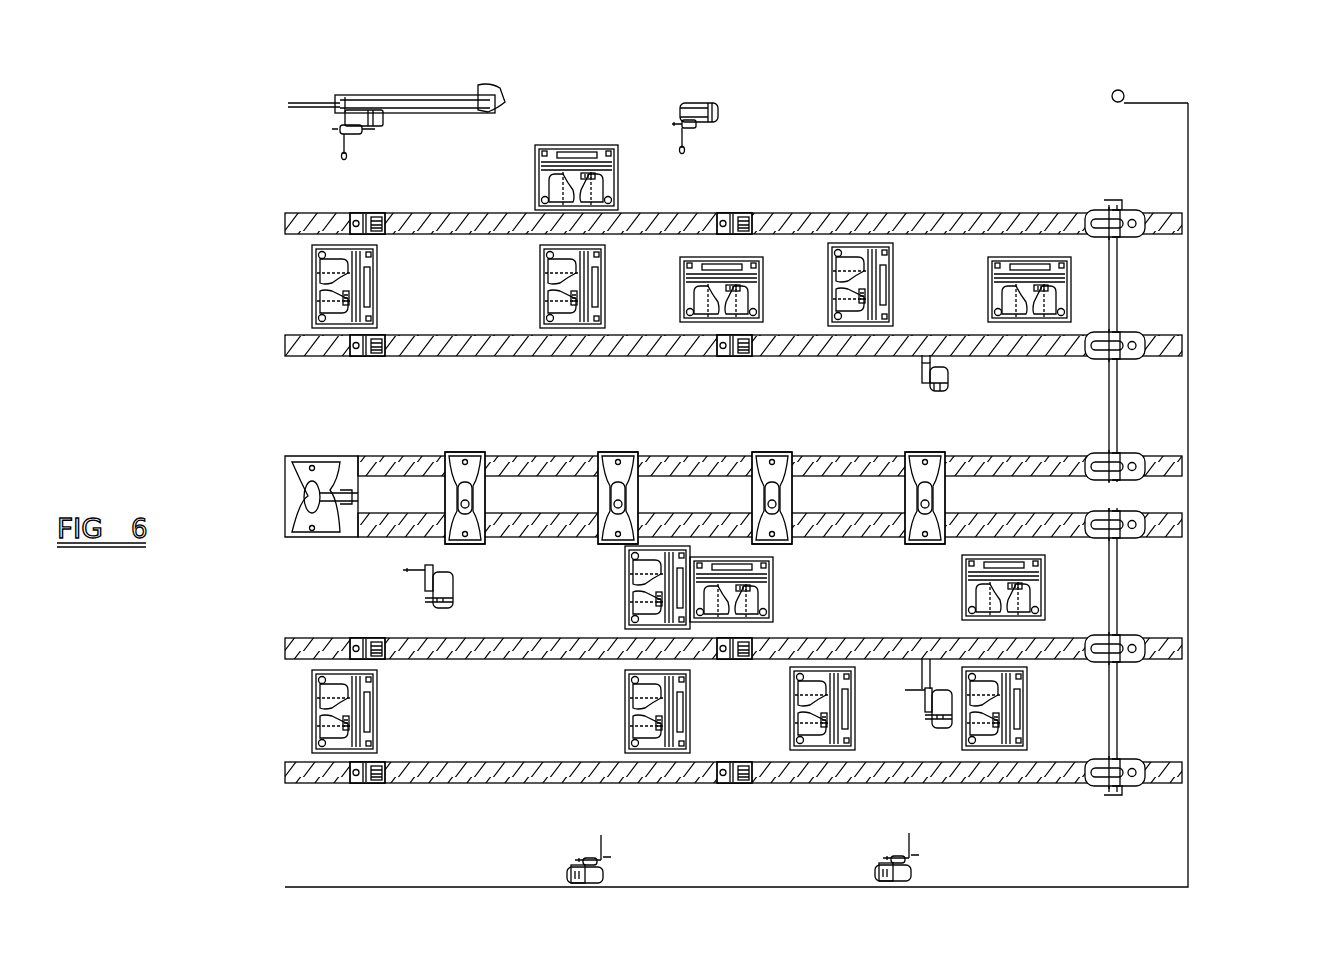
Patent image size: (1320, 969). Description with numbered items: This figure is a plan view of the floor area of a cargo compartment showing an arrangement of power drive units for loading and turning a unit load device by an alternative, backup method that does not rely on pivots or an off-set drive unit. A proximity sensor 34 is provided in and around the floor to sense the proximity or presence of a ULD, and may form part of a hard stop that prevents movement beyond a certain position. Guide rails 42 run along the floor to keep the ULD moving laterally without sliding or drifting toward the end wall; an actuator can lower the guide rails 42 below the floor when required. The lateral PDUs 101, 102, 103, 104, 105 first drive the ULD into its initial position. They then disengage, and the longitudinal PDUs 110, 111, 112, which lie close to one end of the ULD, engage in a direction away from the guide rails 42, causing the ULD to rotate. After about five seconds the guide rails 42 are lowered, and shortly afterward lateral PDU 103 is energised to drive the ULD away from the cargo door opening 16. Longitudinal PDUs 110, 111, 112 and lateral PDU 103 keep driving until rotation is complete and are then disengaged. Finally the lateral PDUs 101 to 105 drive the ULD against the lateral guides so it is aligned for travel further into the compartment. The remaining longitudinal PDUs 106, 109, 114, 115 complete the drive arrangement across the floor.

The cargo door opening 16 is at (897, 74).
The proximity sensor 34 is at (568, 872).
The guide rail 42 is at (1118, 282).
The lateral PDU 101 is at (590, 190).
The lateral PDU 102 is at (742, 580).
The lateral PDU 103 is at (1018, 303).
The lateral PDU 104 is at (1013, 575).
The lateral PDU 105 is at (858, 313).
The longitudinal PDU 106 is at (560, 282).
The longitudinal PDU 109 is at (633, 597).
The longitudinal PDU 110 is at (642, 720).
The longitudinal PDU 111 is at (838, 710).
The longitudinal PDU 112 is at (1010, 698).
The longitudinal PDU 114 is at (320, 282).
The longitudinal PDU 115 is at (325, 698).